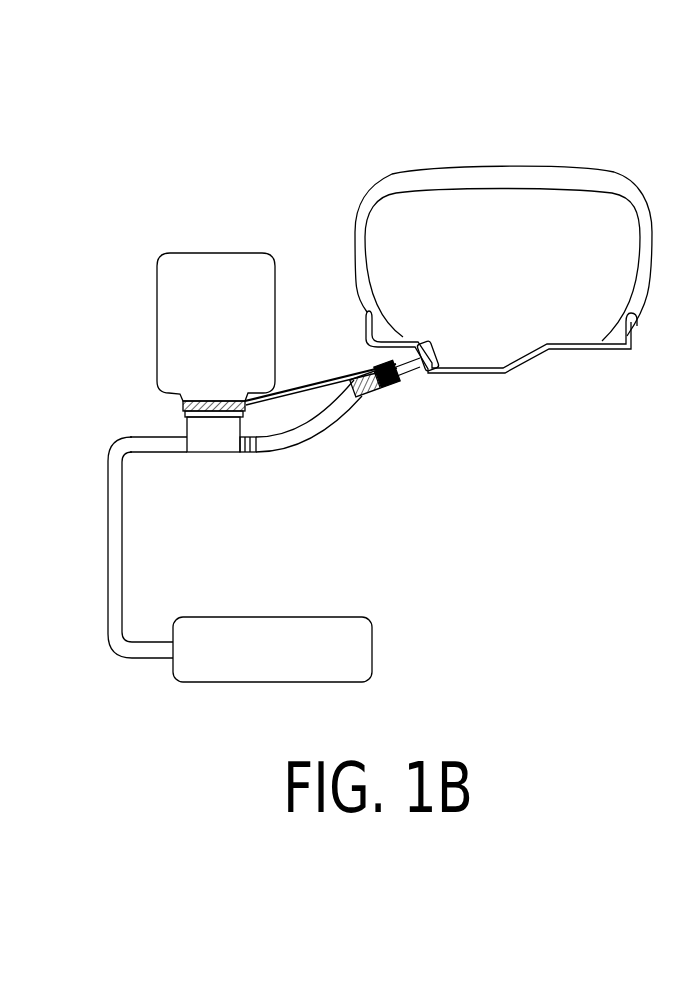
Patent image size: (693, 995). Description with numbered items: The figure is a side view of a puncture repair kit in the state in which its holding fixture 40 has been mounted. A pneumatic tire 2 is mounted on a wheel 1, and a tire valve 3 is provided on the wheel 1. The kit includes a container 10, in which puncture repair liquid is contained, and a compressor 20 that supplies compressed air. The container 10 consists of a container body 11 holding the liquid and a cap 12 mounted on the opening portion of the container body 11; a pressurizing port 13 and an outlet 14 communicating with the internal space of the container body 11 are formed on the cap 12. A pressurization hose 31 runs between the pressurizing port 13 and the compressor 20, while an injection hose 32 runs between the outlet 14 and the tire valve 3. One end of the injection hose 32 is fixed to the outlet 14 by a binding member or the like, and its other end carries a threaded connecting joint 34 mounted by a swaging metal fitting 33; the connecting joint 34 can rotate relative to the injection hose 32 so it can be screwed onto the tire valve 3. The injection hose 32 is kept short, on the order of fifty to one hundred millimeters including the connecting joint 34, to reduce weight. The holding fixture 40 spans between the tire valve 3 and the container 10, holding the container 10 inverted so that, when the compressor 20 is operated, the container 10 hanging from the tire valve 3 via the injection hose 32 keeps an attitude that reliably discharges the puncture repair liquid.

The wheel 1 is at (530, 358).
The pneumatic tire 2 is at (547, 178).
The tire valve 3 is at (421, 370).
The container 10 is at (216, 327).
The container body 11 is at (200, 262).
The cap 12 is at (212, 452).
The pressurizing port 13 is at (163, 447).
The outlet 14 is at (262, 452).
The compressor 20 is at (345, 630).
The pressurization hose 31 is at (117, 578).
The injection hose 32 is at (302, 441).
The swaging metal fitting 33 is at (366, 396).
The connecting joint 34 is at (391, 385).
The holding fixture 40 is at (322, 385).